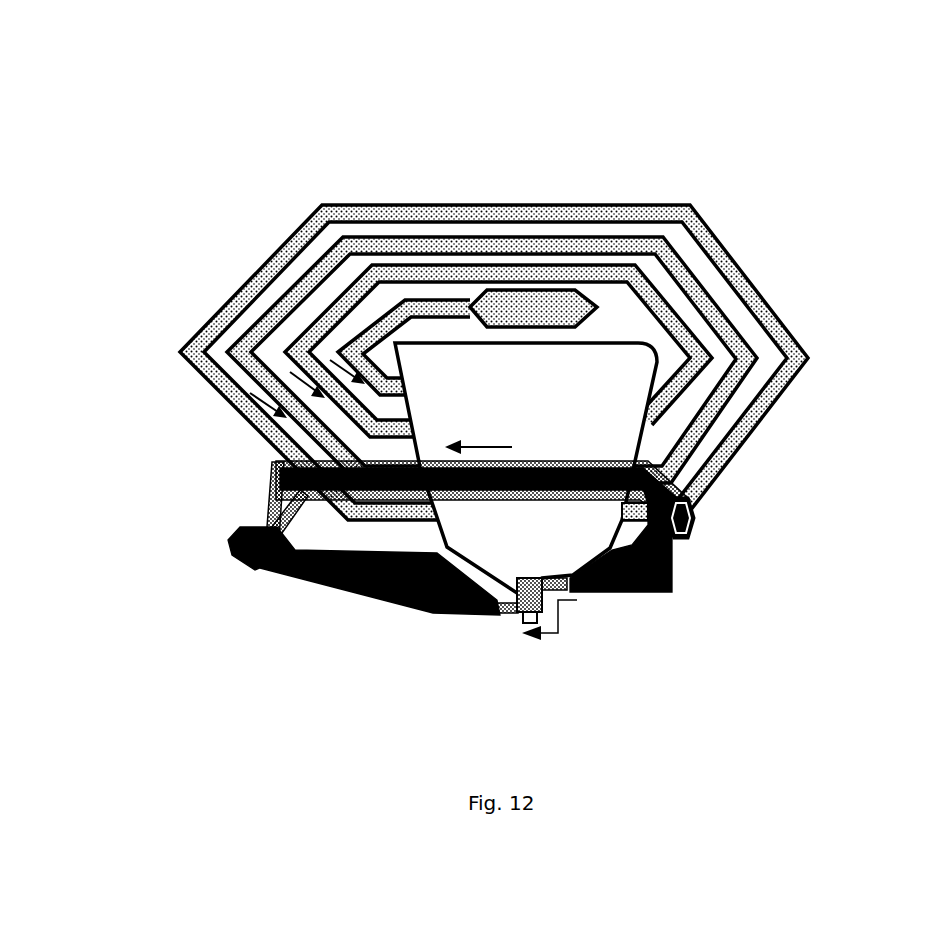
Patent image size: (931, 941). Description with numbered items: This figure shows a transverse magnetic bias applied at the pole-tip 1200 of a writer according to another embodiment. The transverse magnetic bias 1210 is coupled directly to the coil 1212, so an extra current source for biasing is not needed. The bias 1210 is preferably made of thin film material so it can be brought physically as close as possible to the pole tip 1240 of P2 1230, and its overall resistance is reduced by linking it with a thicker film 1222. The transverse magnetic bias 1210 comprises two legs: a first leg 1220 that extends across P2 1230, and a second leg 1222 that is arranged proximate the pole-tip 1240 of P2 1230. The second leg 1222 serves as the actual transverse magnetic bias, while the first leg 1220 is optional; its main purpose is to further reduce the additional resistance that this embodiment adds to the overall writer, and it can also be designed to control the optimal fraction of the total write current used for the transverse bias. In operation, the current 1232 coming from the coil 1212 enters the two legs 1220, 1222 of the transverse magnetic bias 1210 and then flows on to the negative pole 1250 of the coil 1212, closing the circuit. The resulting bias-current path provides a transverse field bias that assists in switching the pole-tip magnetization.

The pole-tip 1200 is at (168, 118).
The transverse magnetic bias 1210 is at (517, 617).
The coil 1212 is at (697, 520).
The first leg 1220 is at (653, 490).
The second leg 1222 is at (673, 556).
The P2 1230 is at (562, 390).
The current 1232 is at (478, 443).
The pole tip 1240 is at (522, 634).
The negative pole 1250 is at (198, 493).